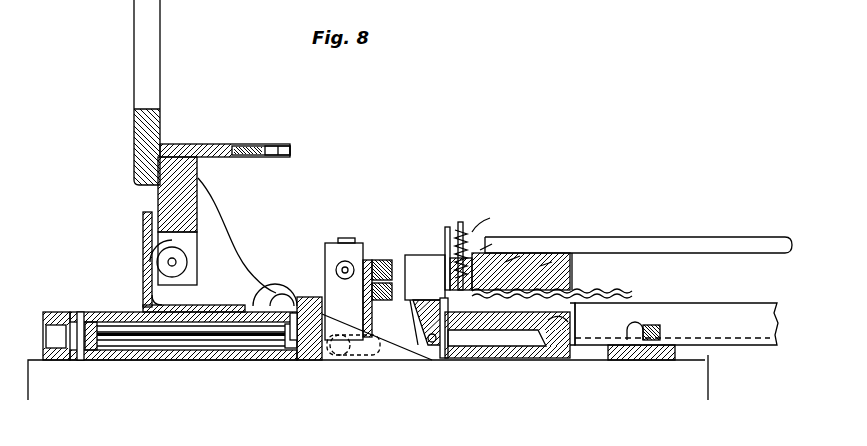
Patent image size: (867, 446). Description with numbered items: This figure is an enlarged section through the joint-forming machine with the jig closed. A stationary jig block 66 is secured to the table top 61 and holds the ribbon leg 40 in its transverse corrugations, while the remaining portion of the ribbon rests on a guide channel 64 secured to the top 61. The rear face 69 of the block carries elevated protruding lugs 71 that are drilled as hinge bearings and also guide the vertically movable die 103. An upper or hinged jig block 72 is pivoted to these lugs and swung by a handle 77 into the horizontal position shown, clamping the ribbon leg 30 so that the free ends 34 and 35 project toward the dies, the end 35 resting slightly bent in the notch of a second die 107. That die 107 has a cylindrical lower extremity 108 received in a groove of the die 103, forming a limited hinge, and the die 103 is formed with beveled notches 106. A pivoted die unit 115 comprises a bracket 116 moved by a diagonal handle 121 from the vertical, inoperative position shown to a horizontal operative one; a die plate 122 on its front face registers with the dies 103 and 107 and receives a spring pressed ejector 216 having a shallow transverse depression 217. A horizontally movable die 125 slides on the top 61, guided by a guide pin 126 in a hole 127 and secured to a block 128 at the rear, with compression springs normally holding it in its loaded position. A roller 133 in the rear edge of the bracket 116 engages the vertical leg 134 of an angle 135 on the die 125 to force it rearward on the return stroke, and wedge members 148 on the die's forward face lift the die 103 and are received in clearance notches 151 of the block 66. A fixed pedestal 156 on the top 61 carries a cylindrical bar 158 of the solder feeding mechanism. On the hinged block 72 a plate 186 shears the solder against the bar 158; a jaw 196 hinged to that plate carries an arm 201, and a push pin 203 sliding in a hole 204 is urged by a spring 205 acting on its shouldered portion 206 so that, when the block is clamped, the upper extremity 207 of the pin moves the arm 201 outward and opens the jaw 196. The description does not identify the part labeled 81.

The ribbon leg 30 is at (604, 296).
The free end of ribbon 34 is at (405, 285).
The free end of ribbon 35 is at (373, 360).
The ribbon leg 40 is at (575, 315).
The table top 61 is at (28, 360).
The guide channel 64 is at (676, 331).
The stationary jig block 66 is at (553, 340).
The rear face of block 69 is at (462, 350).
The lugs 71 is at (410, 336).
The hinged jig block 72 is at (568, 276).
The handle 77 is at (727, 238).
The block edge 81 is at (572, 253).
The vertically movable die 103 is at (448, 346).
The beveled notches 106 is at (436, 346).
The second die 107 is at (421, 316).
The cylindrical lower extremity 108 is at (422, 340).
The pivoted die unit 115 is at (172, 141).
The bracket 116 is at (232, 222).
The handle 121 is at (160, 19).
The die plate 122 is at (200, 160).
The horizontally movable die 125 is at (268, 360).
The guide pin 126 is at (147, 346).
The hole 127 is at (188, 332).
The block 128 is at (62, 312).
The roller 133 is at (197, 262).
The vertical leg of angle 134 is at (143, 256).
The angle 135 is at (143, 278).
The wedge members 148 is at (330, 358).
The clearance notches 151 is at (488, 342).
The pedestal 156 is at (325, 250).
The cylindrical bar 158 is at (336, 270).
The plate 186 is at (447, 232).
The jaw 196 is at (452, 240).
The arm 201 is at (490, 218).
The push pin 203 is at (480, 250).
The hole 204 is at (505, 262).
The spring 205 is at (540, 266).
The shouldered portion 206 is at (408, 283).
The upper extremity of push pin 207 is at (461, 244).
The spring pressed ejector 216 is at (270, 146).
The transverse depression 217 is at (291, 150).